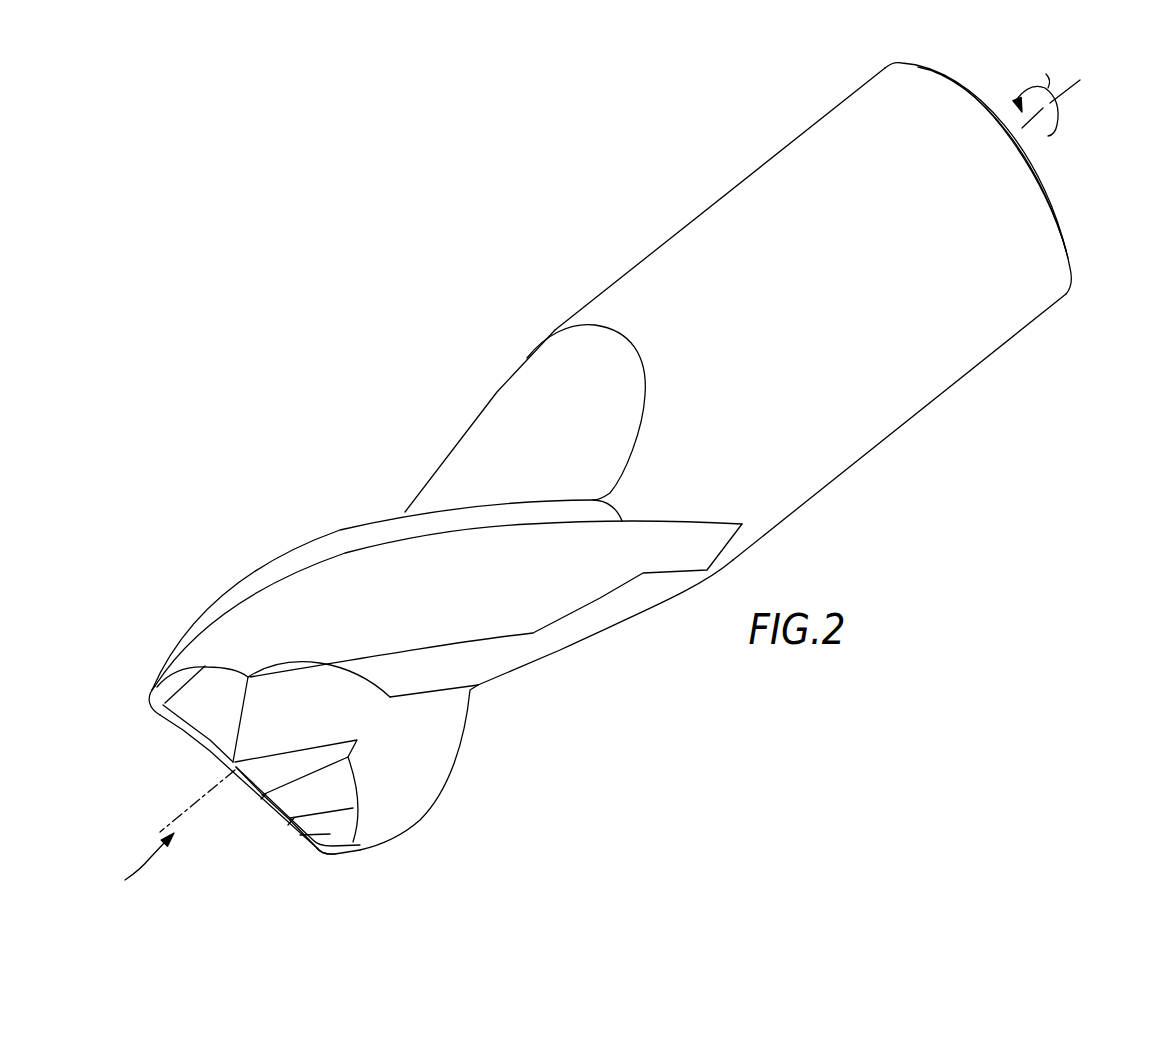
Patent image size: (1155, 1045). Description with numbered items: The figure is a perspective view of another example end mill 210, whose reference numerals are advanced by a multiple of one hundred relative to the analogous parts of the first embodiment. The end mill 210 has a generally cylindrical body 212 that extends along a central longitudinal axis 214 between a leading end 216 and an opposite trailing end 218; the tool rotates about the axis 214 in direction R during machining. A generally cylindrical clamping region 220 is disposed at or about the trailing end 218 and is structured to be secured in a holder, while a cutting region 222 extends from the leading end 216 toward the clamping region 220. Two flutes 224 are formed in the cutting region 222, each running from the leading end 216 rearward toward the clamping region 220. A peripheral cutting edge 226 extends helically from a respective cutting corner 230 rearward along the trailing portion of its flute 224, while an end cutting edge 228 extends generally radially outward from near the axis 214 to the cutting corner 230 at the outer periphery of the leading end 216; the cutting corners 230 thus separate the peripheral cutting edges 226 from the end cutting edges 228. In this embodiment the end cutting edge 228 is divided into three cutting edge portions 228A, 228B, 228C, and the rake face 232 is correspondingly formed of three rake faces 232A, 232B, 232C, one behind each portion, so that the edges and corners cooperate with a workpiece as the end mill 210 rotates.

The end mill 210 is at (484, 274).
The body 212 is at (948, 357).
The central longitudinal axis 214 is at (192, 782).
The leading end 216 is at (132, 868).
The trailing end 218 is at (1070, 163).
The clamping region 220 is at (711, 183).
The cutting region 222 is at (539, 728).
The flutes 224 is at (397, 483).
The peripheral cutting edges 226 is at (337, 533).
The end cutting edge 228 is at (170, 734).
The first cutting edge portion 228A is at (246, 784).
The second cutting edge portion 228B is at (268, 811).
The third cutting edge portion 228C is at (302, 839).
The cutting corners 230 is at (151, 693).
The rake faces 232 is at (395, 841).
The first rake face 232A is at (303, 760).
The second rake face 232B is at (315, 798).
The third rake face 232C is at (335, 830).